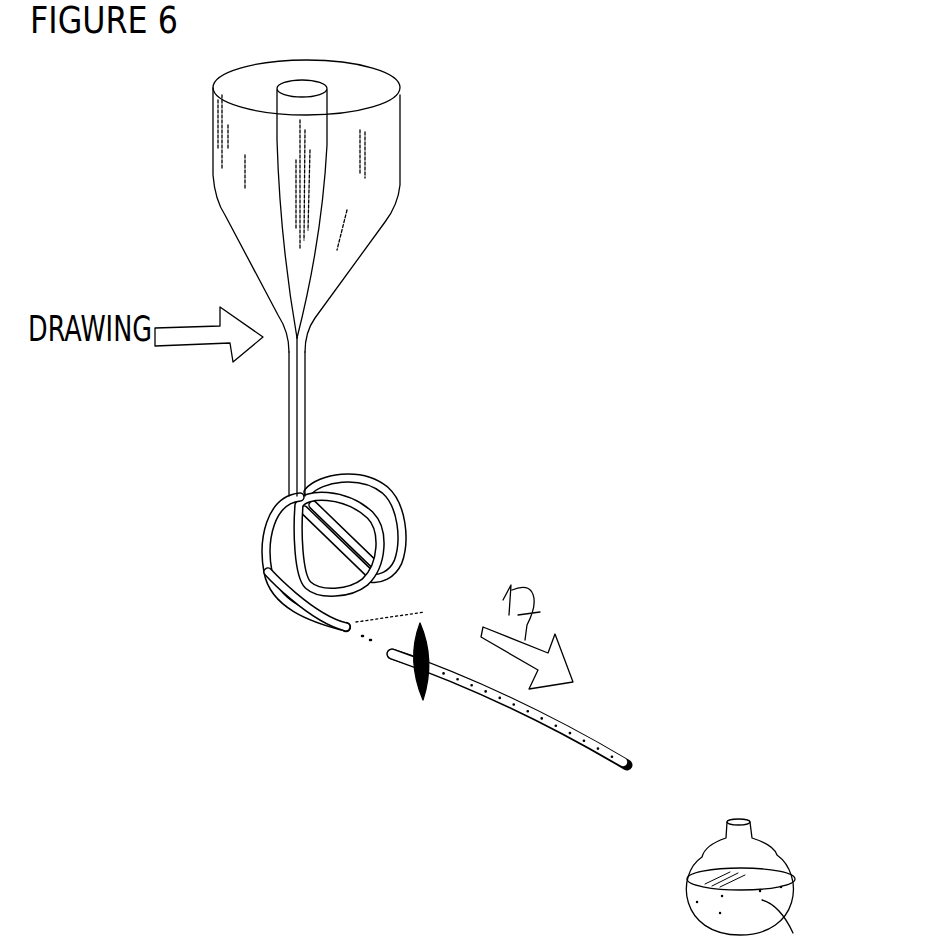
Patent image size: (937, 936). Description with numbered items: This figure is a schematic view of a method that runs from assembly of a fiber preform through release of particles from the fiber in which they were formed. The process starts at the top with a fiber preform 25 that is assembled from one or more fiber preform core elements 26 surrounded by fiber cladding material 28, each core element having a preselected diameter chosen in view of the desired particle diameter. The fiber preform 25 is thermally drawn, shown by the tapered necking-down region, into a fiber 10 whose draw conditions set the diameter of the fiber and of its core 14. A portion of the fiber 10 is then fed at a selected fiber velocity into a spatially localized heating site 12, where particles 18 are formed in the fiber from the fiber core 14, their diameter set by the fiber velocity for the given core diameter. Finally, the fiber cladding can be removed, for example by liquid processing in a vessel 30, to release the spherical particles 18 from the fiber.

The fiber 10 is at (331, 429).
The spatially localized heating site 12 is at (438, 697).
The fiber core 14 is at (290, 455).
The particles 18 is at (500, 708).
The fiber preform 25 is at (175, 119).
The fiber preform core element 26 is at (308, 80).
The fiber cladding material 28 is at (392, 152).
The vessel 30 is at (762, 843).